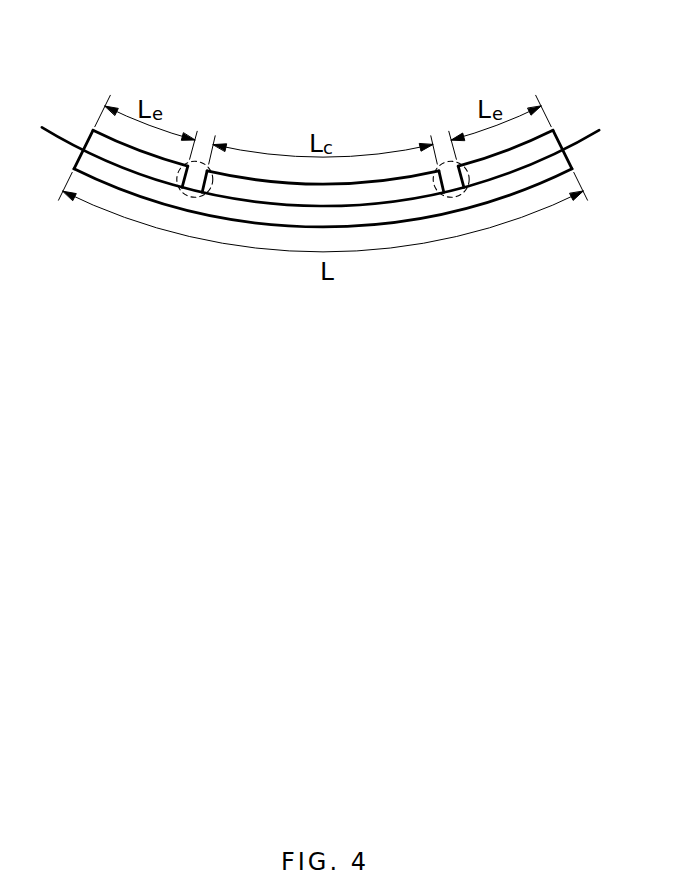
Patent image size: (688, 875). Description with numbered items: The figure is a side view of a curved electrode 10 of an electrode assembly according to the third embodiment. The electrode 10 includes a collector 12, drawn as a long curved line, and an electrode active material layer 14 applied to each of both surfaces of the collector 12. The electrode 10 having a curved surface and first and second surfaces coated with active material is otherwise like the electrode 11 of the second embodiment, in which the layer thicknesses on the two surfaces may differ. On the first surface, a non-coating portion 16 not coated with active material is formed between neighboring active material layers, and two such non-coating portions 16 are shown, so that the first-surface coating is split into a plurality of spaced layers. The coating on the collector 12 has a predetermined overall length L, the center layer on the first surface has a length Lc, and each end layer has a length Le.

The electrode 10 is at (320, 207).
The electrode 11 is at (244, 310).
The collector 12 is at (64, 139).
The electrode active material layer 14 is at (525, 182).
The non-coating portion 16 is at (186, 197).